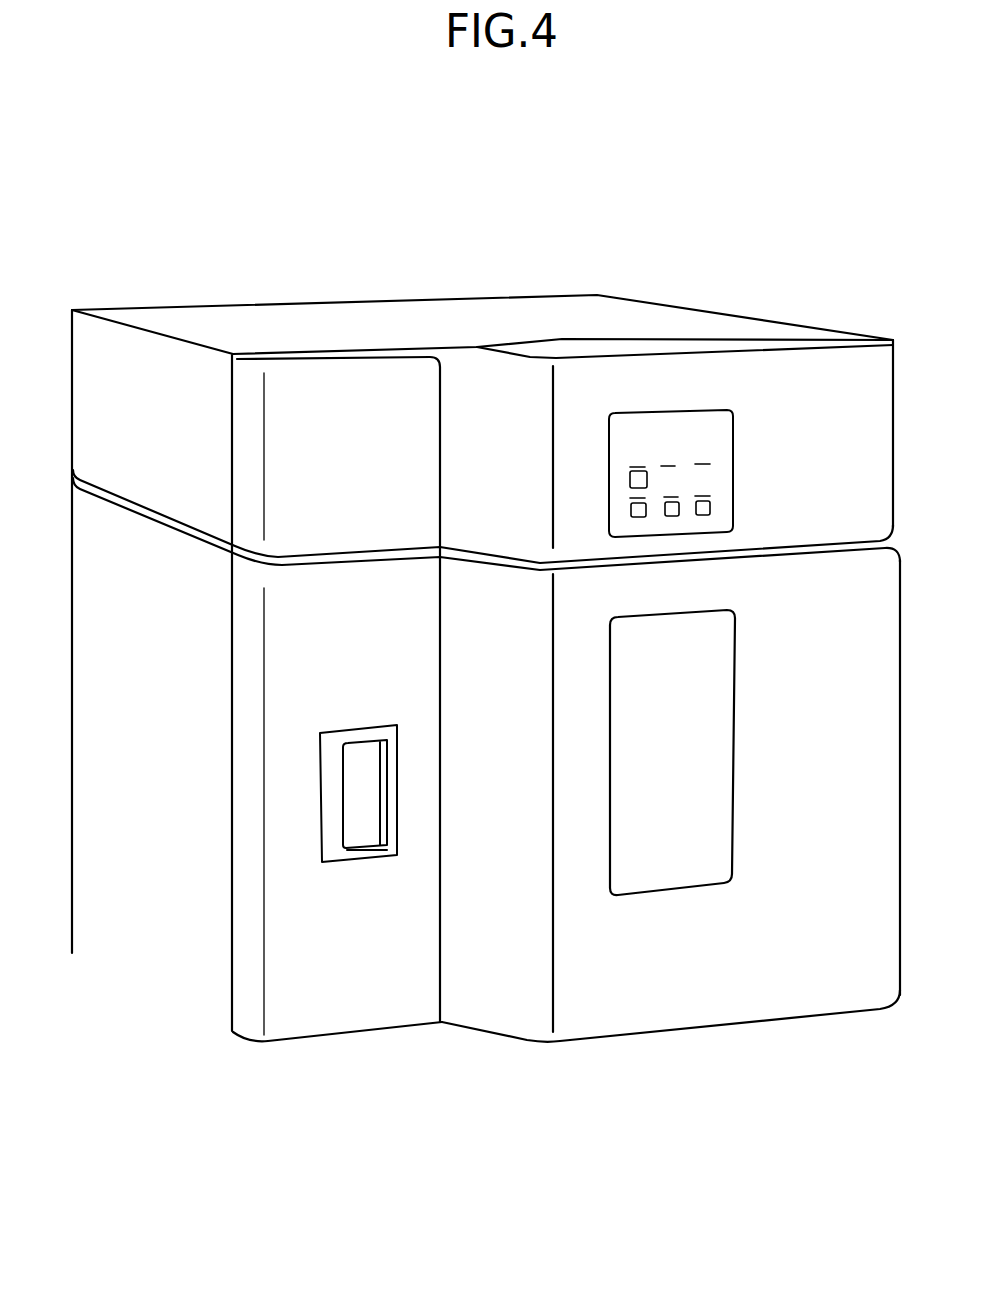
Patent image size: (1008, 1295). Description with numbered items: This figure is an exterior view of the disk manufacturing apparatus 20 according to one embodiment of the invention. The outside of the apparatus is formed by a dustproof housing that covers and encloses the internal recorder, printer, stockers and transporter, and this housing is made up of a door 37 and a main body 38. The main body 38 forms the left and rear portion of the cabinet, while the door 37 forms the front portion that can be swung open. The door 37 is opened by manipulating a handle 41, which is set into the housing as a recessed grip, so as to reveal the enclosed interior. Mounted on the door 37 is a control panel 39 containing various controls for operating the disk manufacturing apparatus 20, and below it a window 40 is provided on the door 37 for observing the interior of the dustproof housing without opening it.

The disk manufacturing apparatus 20 is at (526, 218).
The door 37 is at (645, 996).
The main body 38 is at (165, 962).
The control panel 39 is at (718, 432).
The window 40 is at (713, 764).
The handle 41 is at (372, 828).